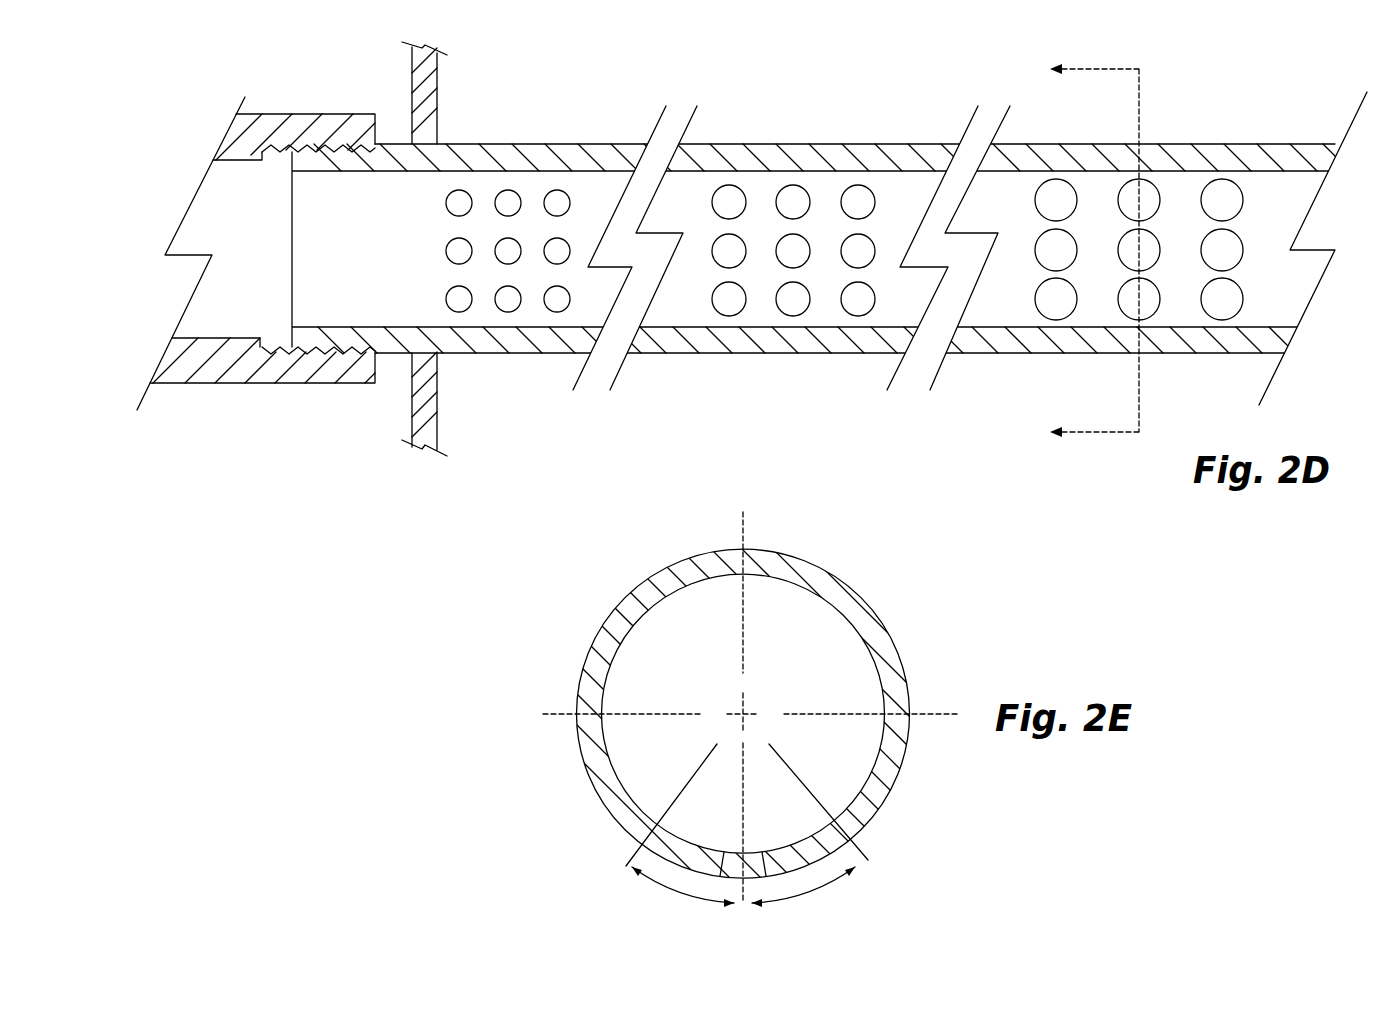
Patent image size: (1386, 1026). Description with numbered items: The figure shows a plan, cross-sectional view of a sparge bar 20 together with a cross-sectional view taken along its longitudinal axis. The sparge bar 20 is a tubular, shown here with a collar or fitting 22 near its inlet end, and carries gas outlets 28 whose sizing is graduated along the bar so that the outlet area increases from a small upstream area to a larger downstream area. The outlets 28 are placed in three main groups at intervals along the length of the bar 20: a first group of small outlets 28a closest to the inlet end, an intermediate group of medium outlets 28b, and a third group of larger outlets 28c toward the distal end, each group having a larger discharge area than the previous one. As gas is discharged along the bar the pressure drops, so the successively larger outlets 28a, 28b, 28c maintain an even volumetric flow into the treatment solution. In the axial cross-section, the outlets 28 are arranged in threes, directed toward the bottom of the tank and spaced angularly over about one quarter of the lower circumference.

In FIG. 2D, the sparge bar 20 is at (460, 353).
In FIG. 2E, the sparge bar 20 is at (578, 688).
In FIG. 2D, the flange 22 is at (437, 107).
In FIG. 2D, the outlets 28 is at (844, 260).
In FIG. 2E, the outlets 28 is at (625, 828).
In FIG. 2D, the small outlets 28a is at (458, 302).
In FIG. 2D, the medium outlets 28b is at (789, 305).
In FIG. 2D, the larger outlets 28c is at (1055, 308).